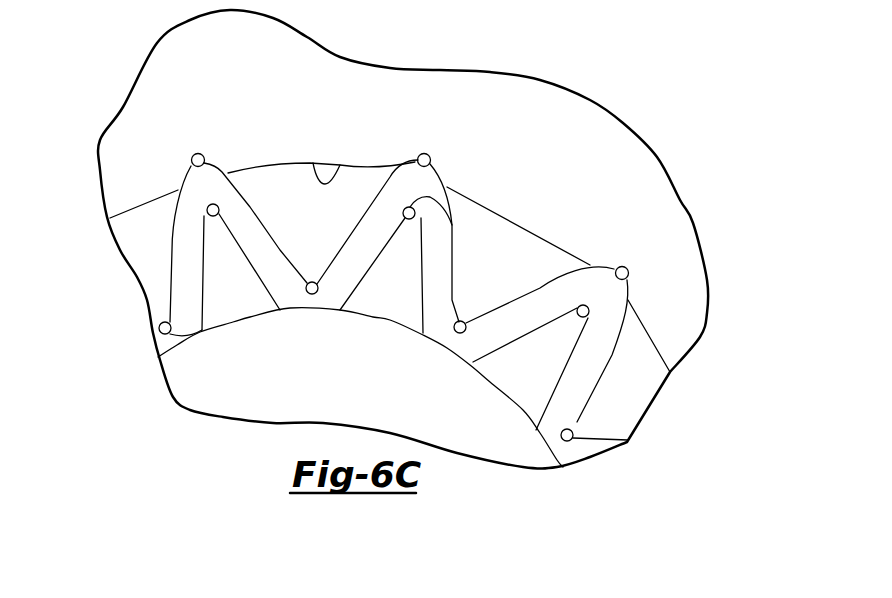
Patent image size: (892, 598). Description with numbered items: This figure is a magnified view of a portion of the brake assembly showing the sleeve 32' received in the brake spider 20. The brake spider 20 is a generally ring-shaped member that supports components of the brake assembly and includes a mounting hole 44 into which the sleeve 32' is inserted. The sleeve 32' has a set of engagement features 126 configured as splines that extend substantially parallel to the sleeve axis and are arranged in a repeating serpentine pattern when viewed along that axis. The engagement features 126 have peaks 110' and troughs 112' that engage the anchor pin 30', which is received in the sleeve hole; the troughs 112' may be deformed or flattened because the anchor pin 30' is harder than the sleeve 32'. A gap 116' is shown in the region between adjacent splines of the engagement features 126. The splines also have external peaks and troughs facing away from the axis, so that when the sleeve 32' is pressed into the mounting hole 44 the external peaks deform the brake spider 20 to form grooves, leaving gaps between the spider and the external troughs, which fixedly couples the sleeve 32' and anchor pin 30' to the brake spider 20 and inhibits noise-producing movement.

The brake spider 20 is at (337, 78).
The anchor pin 30' is at (390, 314).
The sleeve 32' is at (388, 319).
The mounting hole 44 is at (339, 168).
The peak 110' is at (388, 351).
The trough 112' is at (398, 281).
The opening / cell 116' is at (399, 253).
The engagement features 126 is at (603, 364).